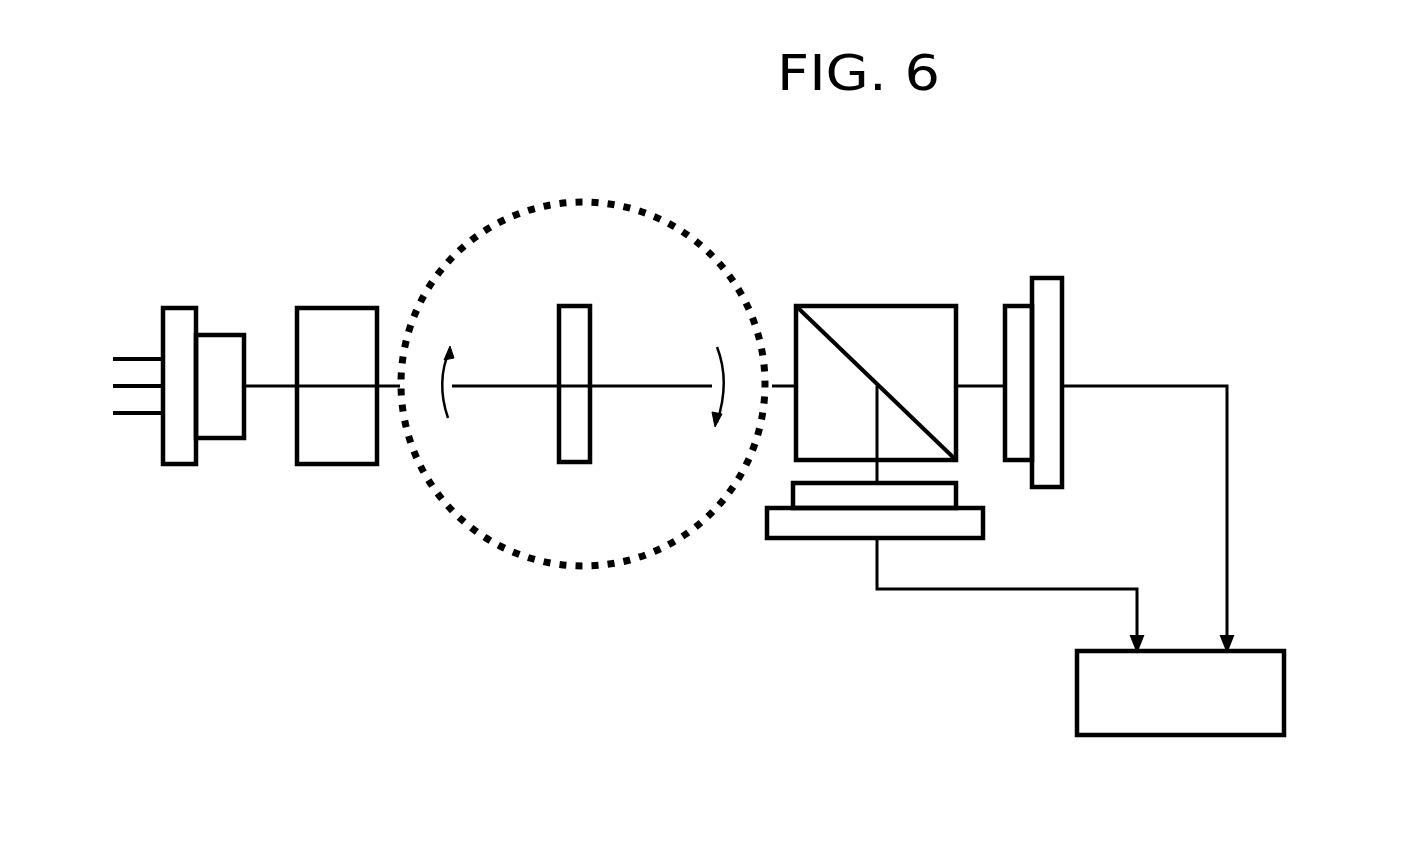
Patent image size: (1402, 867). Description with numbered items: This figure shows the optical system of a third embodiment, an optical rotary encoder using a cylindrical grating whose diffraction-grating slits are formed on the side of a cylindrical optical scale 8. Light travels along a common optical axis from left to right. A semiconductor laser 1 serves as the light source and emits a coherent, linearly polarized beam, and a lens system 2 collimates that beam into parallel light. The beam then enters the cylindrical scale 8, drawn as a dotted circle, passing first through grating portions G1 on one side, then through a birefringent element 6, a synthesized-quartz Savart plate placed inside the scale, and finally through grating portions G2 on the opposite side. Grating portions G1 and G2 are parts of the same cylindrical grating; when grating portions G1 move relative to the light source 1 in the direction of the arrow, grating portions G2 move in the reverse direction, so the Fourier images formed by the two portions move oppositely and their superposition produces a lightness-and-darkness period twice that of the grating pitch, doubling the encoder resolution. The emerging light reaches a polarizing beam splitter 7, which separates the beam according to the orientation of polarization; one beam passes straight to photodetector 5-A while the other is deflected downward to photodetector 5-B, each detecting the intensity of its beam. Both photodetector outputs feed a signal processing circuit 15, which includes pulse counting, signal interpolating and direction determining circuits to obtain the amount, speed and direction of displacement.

The semiconductor laser 1 is at (181, 320).
The lens system 2 is at (327, 325).
The birefringent element 6 is at (578, 318).
The polarizing beam splitter 7 is at (877, 316).
The optical scale 8 is at (597, 204).
The photodetector 5-A is at (1050, 324).
The photodetector 5-B is at (804, 530).
The signal processing circuit 15 is at (1077, 685).
The grating portions G1 is at (431, 382).
The grating portions G2 is at (735, 387).